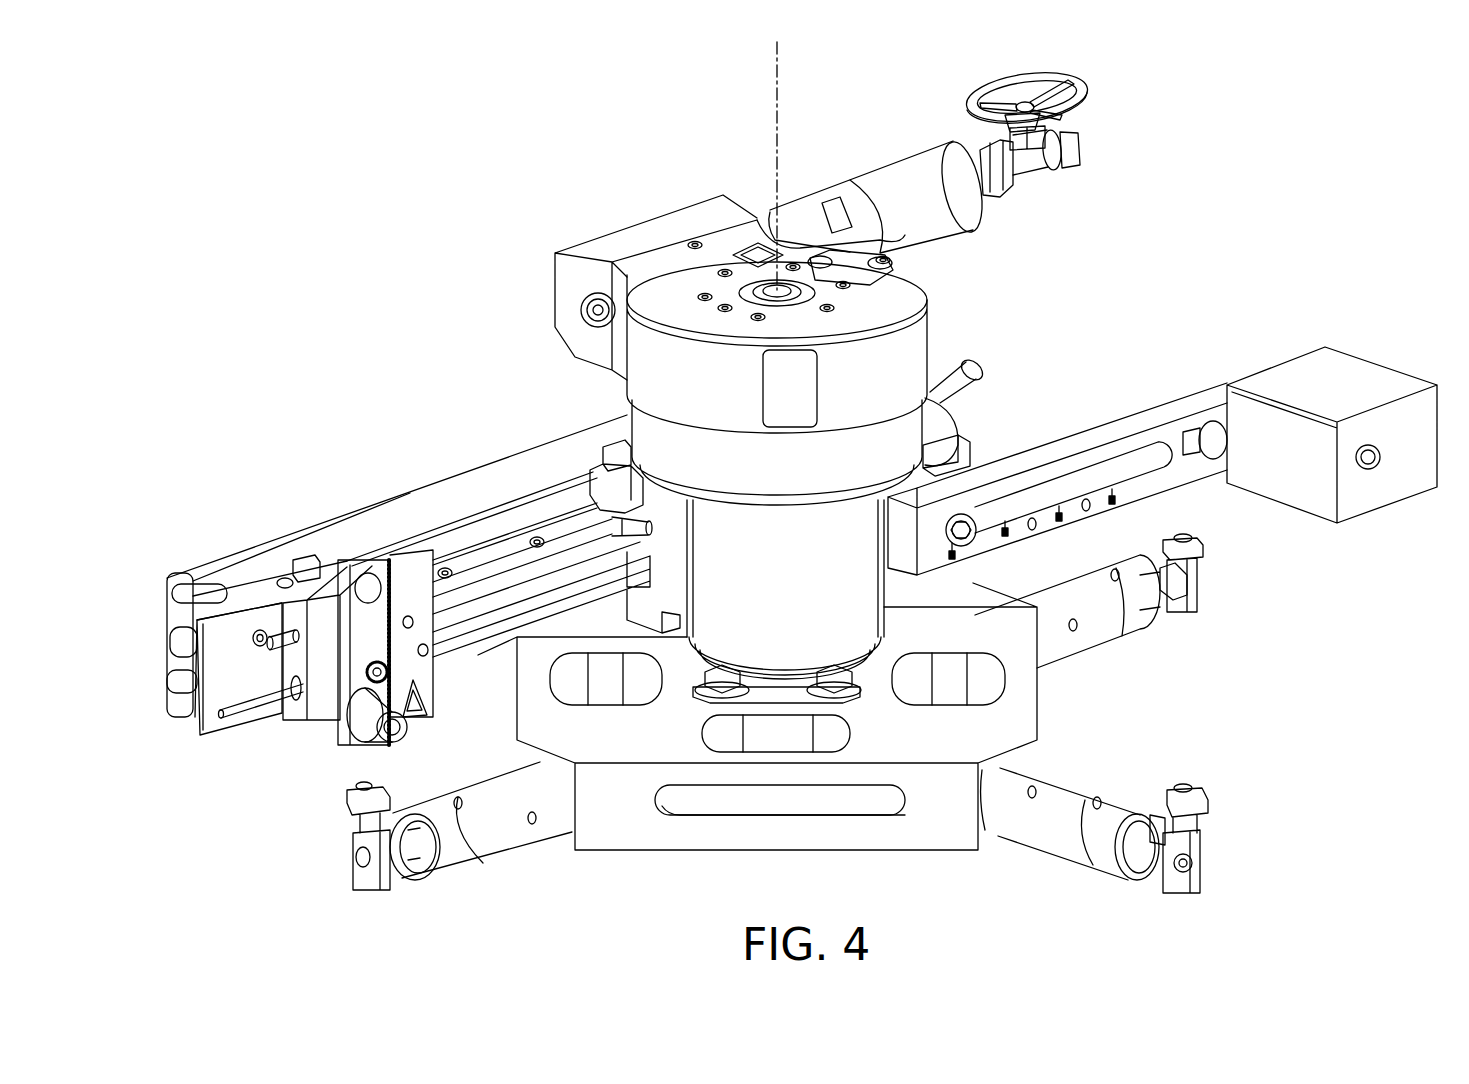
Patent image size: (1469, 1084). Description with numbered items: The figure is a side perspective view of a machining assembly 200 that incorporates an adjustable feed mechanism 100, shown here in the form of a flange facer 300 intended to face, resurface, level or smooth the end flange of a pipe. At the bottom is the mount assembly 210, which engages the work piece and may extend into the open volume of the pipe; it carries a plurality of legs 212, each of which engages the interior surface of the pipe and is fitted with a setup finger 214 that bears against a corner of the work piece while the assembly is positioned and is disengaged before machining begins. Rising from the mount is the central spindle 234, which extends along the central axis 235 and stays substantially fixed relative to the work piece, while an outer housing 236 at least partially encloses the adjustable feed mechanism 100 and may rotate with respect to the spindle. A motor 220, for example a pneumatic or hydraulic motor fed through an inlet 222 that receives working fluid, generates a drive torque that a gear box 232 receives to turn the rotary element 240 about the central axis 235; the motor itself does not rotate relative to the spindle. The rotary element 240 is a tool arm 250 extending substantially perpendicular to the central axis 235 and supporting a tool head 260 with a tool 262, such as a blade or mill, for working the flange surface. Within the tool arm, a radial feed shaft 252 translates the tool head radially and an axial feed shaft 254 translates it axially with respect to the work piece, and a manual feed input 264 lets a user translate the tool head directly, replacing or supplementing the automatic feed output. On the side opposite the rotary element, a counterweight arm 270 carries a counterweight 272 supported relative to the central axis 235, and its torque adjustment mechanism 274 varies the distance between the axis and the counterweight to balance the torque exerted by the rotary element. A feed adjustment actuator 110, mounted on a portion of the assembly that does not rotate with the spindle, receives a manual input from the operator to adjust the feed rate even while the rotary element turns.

The adjustable feed mechanism 100 is at (620, 390).
The feed adjustment actuator 110 is at (900, 243).
The machining assembly 200 is at (452, 138).
The mount assembly 210 is at (627, 858).
The leg 212 is at (447, 880).
The setup finger 214 is at (345, 840).
The motor 220 is at (882, 160).
The inlet 222 is at (1075, 150).
The gear box 232 is at (595, 245).
The central spindle 234 is at (765, 245).
The central axis 235 is at (777, 107).
The outer housing 236 is at (860, 607).
The rotary element 240 is at (235, 540).
The tool arm 250 is at (275, 537).
The radial feed shaft 252 is at (243, 713).
The axial feed shaft 254 is at (280, 650).
The tool head 260 is at (320, 742).
The tool 262 is at (365, 742).
The manual feed input 264 is at (980, 387).
The counterweight arm 270 is at (1097, 420).
The counterweight 272 is at (1370, 355).
The torque adjustment mechanism 274 is at (1078, 480).
The flange facer 300 is at (452, 178).